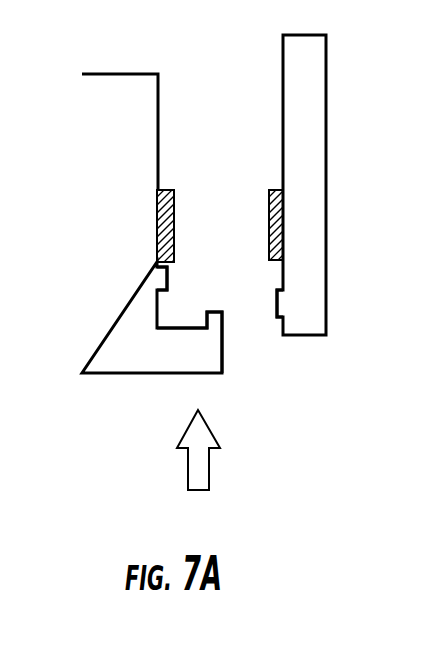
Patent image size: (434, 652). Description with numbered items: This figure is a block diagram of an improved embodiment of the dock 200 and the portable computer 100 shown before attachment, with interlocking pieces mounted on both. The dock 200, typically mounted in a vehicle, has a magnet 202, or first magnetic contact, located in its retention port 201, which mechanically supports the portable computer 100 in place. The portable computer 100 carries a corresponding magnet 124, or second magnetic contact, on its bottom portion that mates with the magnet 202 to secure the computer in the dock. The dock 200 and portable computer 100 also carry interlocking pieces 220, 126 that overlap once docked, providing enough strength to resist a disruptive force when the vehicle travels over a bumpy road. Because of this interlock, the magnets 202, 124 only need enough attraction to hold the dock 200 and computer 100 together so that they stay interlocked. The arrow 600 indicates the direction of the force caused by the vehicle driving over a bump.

The portable computer 100 is at (327, 128).
The magnet 124 is at (273, 188).
The interlocking piece 126 is at (277, 302).
The dock 200 is at (82, 213).
The retention port 201 is at (222, 352).
The magnet 202 is at (167, 189).
The interlocking piece 220 is at (165, 277).
The arrow 600 is at (187, 462).